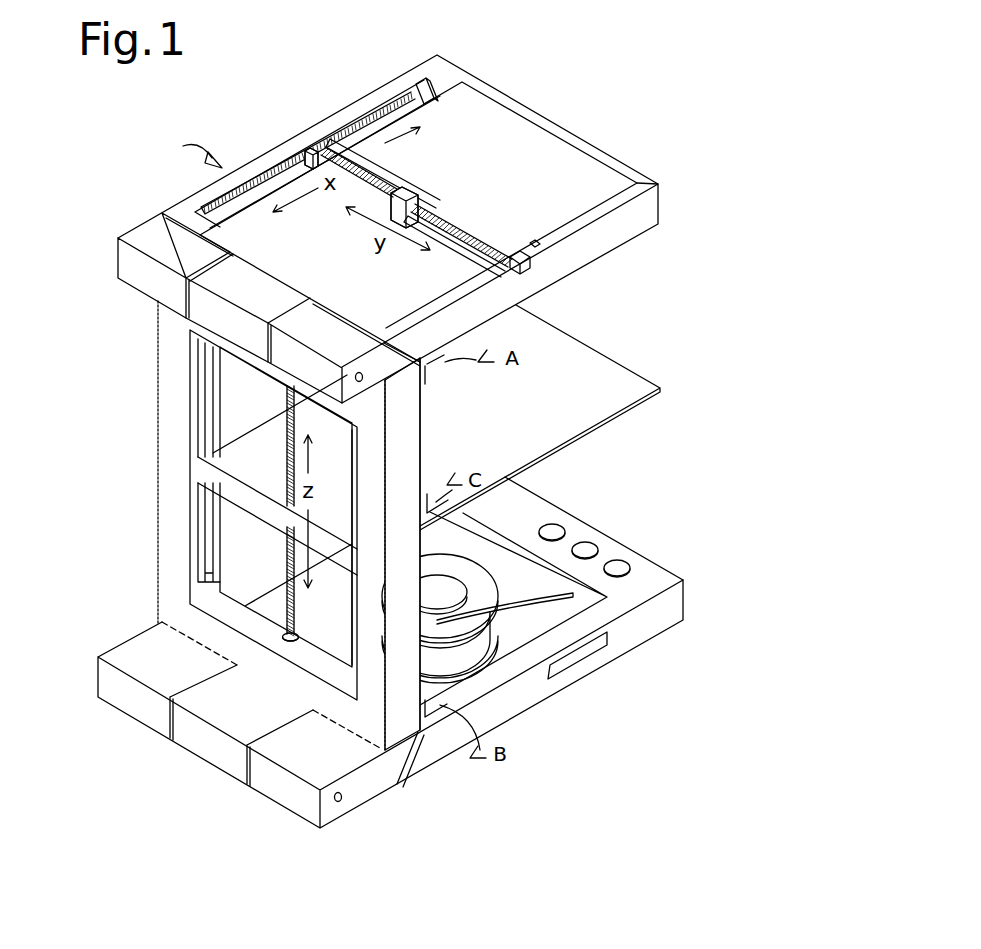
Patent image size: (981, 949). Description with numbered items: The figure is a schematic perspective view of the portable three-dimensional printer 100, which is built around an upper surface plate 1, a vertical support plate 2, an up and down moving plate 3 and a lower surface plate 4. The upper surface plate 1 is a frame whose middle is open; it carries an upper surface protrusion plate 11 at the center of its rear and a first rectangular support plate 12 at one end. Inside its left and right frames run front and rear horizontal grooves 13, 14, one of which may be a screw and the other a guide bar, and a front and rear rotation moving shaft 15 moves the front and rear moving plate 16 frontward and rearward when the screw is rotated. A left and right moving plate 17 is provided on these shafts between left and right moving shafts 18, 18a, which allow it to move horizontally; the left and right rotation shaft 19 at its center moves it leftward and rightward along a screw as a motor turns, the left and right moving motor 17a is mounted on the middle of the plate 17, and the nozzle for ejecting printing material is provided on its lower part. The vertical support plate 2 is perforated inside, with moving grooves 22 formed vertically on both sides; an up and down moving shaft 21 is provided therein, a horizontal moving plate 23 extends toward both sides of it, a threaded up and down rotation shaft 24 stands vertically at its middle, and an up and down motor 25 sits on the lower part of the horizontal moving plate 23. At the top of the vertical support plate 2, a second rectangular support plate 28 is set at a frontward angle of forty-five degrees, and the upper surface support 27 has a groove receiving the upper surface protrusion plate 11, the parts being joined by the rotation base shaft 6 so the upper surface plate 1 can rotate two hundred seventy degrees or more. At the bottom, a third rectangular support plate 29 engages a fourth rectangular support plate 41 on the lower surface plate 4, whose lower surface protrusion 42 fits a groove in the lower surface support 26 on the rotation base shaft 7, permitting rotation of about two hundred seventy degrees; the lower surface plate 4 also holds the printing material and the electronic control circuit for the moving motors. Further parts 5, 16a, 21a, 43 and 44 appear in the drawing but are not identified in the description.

The portable 3D printer 100 is at (170, 149).
The upper surface plate 1 is at (258, 162).
The vertical support plate 2 is at (410, 424).
The up and down moving plate 3 is at (606, 380).
The lower surface plate 4 is at (520, 700).
The filament spool 5 is at (474, 587).
The upper rotation base shaft 6 is at (361, 372).
The lower rotation base shaft 7 is at (338, 803).
The upper surface protrusion plate 11 is at (200, 303).
The first rectangular support plate 12 is at (418, 348).
The front and rear horizontal groove 13 is at (409, 86).
The front and rear horizontal groove 14 is at (587, 210).
The front and rear rotation moving shaft 15 is at (379, 110).
The front and rear moving plate 16 is at (313, 148).
The rail end 16a is at (538, 245).
The left and right moving plate 17 is at (427, 177).
The left and right moving motor 17a is at (445, 192).
The left and right moving shaft 18 is at (457, 207).
The left and right moving shaft 18a is at (510, 240).
The left and right rotation shaft 19 is at (480, 222).
The up and down moving shaft 21 is at (200, 417).
The column side member 21a is at (350, 647).
The moving grooves 22 is at (208, 373).
The horizontal moving plate 23 is at (260, 480).
The up and down rotation shaft 24 is at (296, 422).
The up and down motor 25 is at (289, 642).
The lower surface support 26 is at (288, 793).
The upper surface support 27 is at (130, 256).
The second rectangular support plate 28 is at (405, 355).
The third rectangular support plate 29 is at (400, 790).
The fourth rectangular support plate 41 is at (432, 763).
The lower surface protrusion 42 is at (210, 750).
The slot 43 is at (586, 653).
The control buttons 44 is at (584, 548).